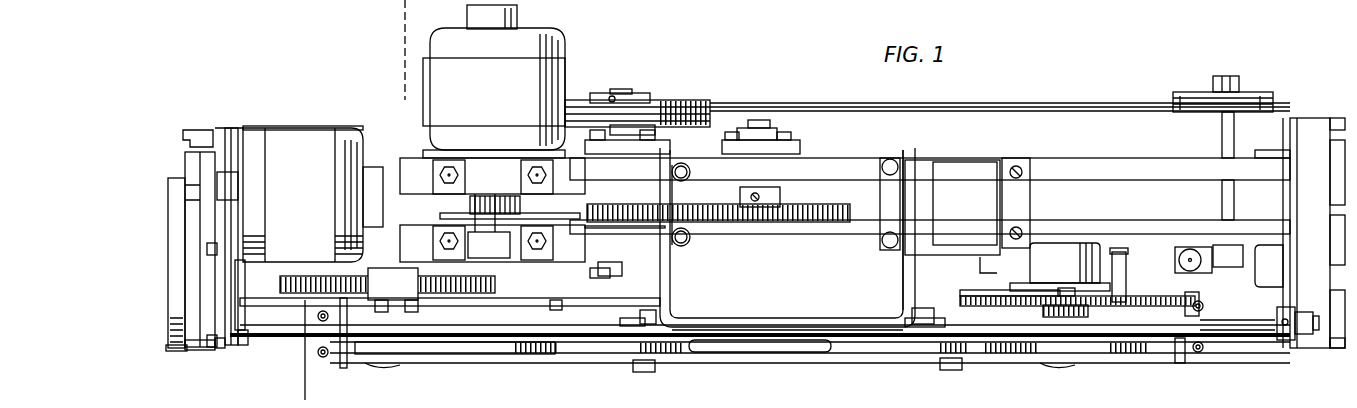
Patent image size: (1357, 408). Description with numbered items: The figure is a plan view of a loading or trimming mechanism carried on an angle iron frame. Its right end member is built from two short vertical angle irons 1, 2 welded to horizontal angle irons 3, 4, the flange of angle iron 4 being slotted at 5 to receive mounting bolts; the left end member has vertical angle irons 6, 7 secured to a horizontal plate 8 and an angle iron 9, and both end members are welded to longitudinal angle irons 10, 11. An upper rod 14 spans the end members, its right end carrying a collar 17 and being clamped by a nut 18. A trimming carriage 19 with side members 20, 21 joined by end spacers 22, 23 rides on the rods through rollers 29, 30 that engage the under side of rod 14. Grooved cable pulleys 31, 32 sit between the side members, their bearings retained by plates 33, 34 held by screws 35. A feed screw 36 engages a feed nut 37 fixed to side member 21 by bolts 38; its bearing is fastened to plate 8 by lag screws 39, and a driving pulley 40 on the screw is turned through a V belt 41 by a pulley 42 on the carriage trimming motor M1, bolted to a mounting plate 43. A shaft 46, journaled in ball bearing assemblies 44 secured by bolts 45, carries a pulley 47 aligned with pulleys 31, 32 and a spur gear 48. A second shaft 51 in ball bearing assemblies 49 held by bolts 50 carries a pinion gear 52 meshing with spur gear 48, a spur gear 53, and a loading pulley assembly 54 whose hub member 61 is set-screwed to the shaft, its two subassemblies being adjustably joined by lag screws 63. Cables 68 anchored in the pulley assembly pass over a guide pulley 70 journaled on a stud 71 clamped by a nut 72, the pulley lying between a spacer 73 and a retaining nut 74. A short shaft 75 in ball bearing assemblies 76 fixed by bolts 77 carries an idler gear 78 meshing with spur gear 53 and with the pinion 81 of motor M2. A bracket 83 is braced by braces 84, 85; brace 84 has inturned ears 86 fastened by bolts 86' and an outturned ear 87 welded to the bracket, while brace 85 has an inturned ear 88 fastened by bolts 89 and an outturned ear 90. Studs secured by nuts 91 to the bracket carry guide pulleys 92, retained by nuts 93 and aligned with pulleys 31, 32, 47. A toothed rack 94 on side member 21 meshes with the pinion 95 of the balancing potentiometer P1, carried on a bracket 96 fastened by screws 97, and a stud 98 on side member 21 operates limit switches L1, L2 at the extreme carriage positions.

The vertical angle iron 1 is at (1279, 152).
The vertical angle iron 2 is at (396, 12).
The horizontal angle iron 3 is at (1310, 120).
The horizontal angle iron 4 is at (1340, 338).
The slot 5 is at (185, 143).
The vertical angle iron 6 is at (238, 130).
The vertical angle iron 7 is at (245, 284).
The plate 8 is at (237, 340).
The angle iron 9 is at (205, 350).
The longitudinal angle iron 10 is at (1092, 162).
The longitudinal angle iron 11 is at (1128, 224).
The rod 14 is at (1238, 328).
The collar 17 is at (1277, 335).
The nut 18 is at (1306, 334).
The trimming carriage 19 is at (760, 355).
The side member 20 is at (554, 361).
The side member 21 is at (562, 306).
The end spacer 22 is at (339, 365).
The end spacer 23 is at (1180, 358).
The roller 29 is at (318, 316).
The roller 30 is at (318, 352).
The cable pulley 31 is at (388, 356).
The cable pulley 32 is at (1134, 357).
The plate 33 is at (484, 300).
The plate 34 is at (519, 368).
The screw 35 is at (458, 376).
The feed screw 36 is at (494, 282).
The feed nut 37 is at (394, 270).
The bolt 38 is at (408, 312).
The lag screw 39 is at (209, 250).
The driving pulley 40 is at (174, 351).
The V belt 41 is at (176, 178).
The pulley 42 is at (193, 180).
The mounting plate 43 is at (350, 128).
The ball bearing assembly 44 is at (780, 130).
The bolt 45 is at (728, 146).
The shaft 46 is at (225, 348).
The pulley 47 is at (736, 357).
The spur gear 48 is at (830, 208).
The ball bearing assembly 49 is at (593, 144).
The bolt 50 is at (655, 142).
The shaft 51 is at (645, 94).
The pinion gear 52 is at (640, 226).
The spur gear 53 is at (578, 224).
The loading pulley assembly 54 is at (637, 99).
The hub member 61 is at (609, 100).
The lag screw 63 is at (618, 135).
The cable 68 is at (893, 104).
The guide pulley 70 is at (1200, 98).
The stud 71 is at (1222, 212).
The nut 72 is at (1240, 256).
The spacer 73 is at (1222, 146).
The nut 74 is at (1234, 80).
The short shaft 75 is at (489, 226).
The ball bearing assembly 76 is at (437, 168).
The bolt 77 is at (442, 176).
The idler gear 78 is at (471, 205).
The pinion 81 is at (510, 214).
The bracket 83 is at (859, 334).
The brace 84 is at (667, 289).
The brace 85 is at (901, 288).
The ear 86 is at (660, 217).
The bolt 86' is at (704, 206).
The ear 87 is at (622, 328).
The ear 88 is at (880, 193).
The bolt 89 is at (887, 168).
The ear 90 is at (938, 322).
The nut 91 is at (648, 310).
The guide pulley 92 is at (666, 356).
The nut 93 is at (652, 372).
The toothed rack 94 is at (1152, 288).
The pinion 95 is at (1050, 306).
The bracket 96 is at (1005, 195).
The screw 97 is at (1014, 166).
The stud 98 is at (1124, 262).
The carriage trimming motor M1 is at (310, 128).
The motor M2 is at (545, 68).
The balancing potentiometer P1 is at (1068, 250).
The limit switch L1 is at (1234, 272).
The limit switch L2 is at (982, 260).